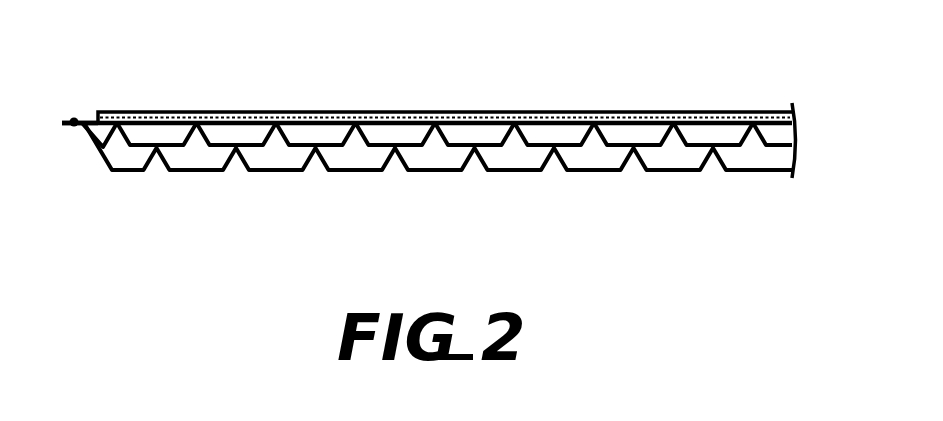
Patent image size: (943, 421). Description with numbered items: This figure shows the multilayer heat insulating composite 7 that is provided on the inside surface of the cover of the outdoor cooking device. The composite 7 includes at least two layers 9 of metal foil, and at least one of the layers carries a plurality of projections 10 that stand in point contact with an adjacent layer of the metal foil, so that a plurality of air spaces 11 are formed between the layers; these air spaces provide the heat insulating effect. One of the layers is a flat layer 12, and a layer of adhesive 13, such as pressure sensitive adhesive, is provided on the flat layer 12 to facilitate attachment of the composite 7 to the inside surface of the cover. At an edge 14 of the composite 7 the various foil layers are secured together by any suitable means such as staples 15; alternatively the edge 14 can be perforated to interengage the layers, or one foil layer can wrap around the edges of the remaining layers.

The multilayer heat insulating composite 7 is at (453, 192).
The layers of metal foil 9 is at (283, 168).
The projections 10 is at (247, 147).
The air spaces 11 is at (727, 133).
The flat layer 12 is at (767, 103).
The layer of adhesive 13 is at (441, 111).
The edge 14 is at (63, 125).
The staples 15 is at (74, 119).